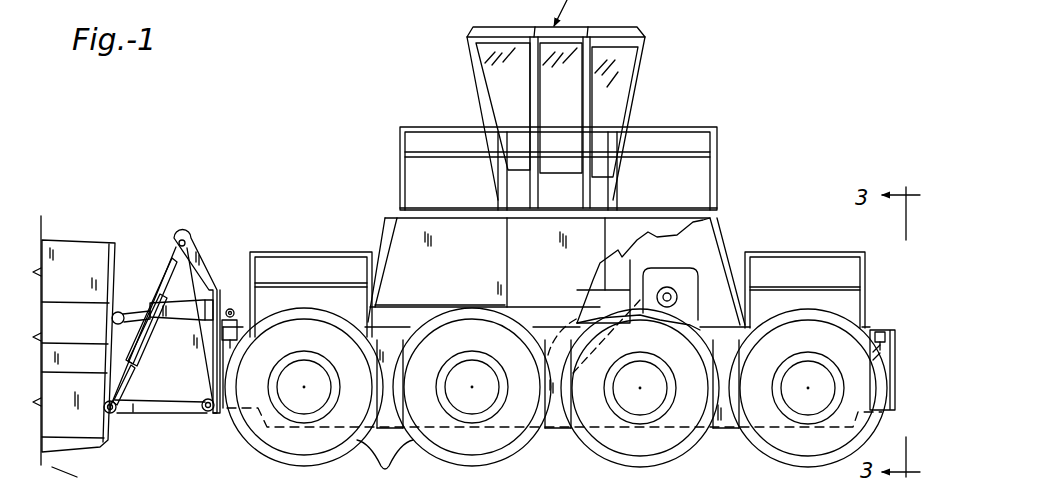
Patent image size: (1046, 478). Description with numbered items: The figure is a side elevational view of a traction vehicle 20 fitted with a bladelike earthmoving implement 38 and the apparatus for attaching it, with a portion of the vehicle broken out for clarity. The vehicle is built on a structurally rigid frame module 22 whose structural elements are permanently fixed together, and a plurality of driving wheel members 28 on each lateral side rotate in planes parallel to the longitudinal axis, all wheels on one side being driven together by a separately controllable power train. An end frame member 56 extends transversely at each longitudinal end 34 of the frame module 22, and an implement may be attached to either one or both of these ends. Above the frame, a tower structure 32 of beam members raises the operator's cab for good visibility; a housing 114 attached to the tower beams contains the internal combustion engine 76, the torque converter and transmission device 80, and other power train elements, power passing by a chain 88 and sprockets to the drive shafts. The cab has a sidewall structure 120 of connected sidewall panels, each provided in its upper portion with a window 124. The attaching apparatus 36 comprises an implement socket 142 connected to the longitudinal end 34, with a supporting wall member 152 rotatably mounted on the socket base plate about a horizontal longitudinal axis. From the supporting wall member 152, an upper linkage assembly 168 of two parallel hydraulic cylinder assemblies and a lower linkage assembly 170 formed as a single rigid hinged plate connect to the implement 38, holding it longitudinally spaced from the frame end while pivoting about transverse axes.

The traction vehicle 20 is at (348, 93).
The frame module 22 is at (406, 315).
The driving wheel members 28 is at (745, 430).
The tower structure 32 is at (412, 240).
The longitudinal ends 34 is at (241, 331).
The attaching apparatus 36 is at (141, 246).
The implement 38 is at (81, 239).
The end frame member 56 is at (895, 388).
The internal combustion engine 76 is at (682, 248).
The torque converter and transmission device 80 is at (687, 280).
The chain 88 is at (578, 332).
The housing 114 is at (442, 291).
The sidewall structure 120 is at (637, 88).
The window 124 is at (627, 67).
The implement socket 142 is at (239, 333).
The supporting wall member 152 is at (217, 370).
The upper linkage assembly 168 is at (177, 326).
The lower linkage assembly 170 is at (159, 419).